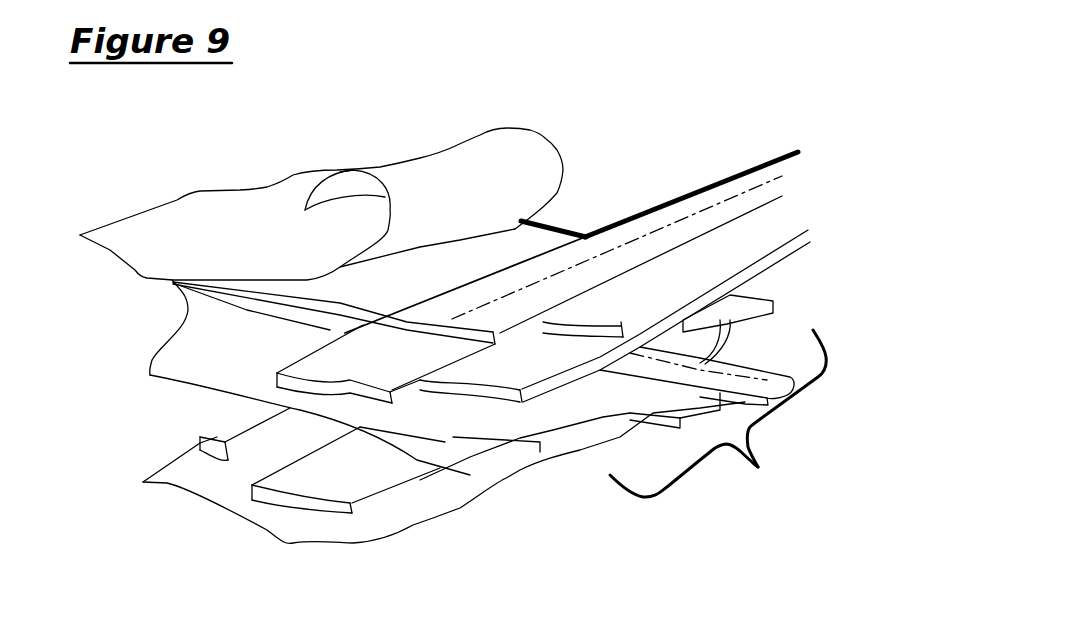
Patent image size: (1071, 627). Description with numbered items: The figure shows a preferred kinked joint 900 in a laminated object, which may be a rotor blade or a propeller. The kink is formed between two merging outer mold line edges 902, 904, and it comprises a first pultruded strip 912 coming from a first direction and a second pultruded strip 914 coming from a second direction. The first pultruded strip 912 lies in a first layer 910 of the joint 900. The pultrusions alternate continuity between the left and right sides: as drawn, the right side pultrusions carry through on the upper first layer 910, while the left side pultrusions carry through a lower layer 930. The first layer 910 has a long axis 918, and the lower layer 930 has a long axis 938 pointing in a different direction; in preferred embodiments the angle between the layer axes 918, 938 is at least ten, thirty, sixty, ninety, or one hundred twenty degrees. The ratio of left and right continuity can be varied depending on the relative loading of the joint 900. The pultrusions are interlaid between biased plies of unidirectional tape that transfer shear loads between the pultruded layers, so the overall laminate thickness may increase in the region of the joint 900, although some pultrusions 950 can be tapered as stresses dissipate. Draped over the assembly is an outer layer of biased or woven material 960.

The kinked joint 900 is at (378, 104).
The outer mold line edge 902 is at (558, 225).
The outer mold line edge 904 is at (726, 178).
The first layer 910 is at (797, 132).
The first pultruded strip 912 is at (363, 320).
The second pultruded strip 914 is at (470, 343).
The long axis 918 is at (665, 228).
The lower layer 930 is at (758, 467).
The long axis 938 is at (728, 374).
The pultrusions 950 is at (439, 482).
The outer layer of biased or woven material 960 is at (532, 128).